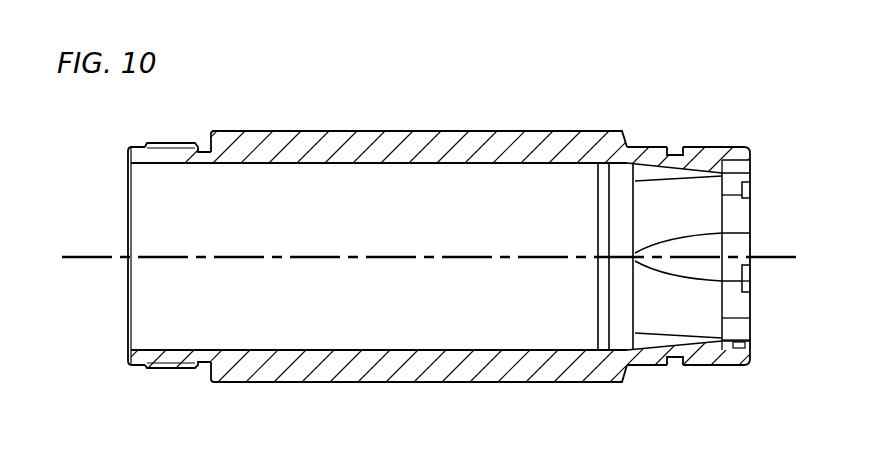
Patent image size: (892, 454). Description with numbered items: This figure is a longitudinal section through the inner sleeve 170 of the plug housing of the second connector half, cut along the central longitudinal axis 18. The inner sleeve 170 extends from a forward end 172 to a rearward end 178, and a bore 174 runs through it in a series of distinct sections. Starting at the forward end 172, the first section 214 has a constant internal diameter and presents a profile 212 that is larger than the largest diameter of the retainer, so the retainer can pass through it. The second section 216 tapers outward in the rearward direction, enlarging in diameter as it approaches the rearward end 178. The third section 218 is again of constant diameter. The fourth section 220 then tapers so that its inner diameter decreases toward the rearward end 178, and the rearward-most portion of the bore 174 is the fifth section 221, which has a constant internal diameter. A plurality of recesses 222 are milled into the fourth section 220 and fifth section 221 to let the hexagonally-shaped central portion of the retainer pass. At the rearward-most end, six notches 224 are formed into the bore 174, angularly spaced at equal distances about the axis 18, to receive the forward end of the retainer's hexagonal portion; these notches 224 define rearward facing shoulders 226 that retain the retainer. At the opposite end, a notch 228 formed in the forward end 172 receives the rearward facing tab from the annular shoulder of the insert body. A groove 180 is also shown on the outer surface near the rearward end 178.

The central longitudinal axis 18 is at (110, 255).
The inner sleeve 170 is at (444, 130).
The forward end 172 is at (174, 145).
The bore 174 is at (302, 164).
The rearward end 178 is at (707, 153).
The groove 180 is at (673, 152).
The profile 212 is at (299, 344).
The first section 214 is at (390, 350).
The second section 216 is at (600, 350).
The third section 218 is at (621, 163).
The fourth section 220 is at (652, 343).
The fifth section 221 is at (743, 338).
The recesses 222 is at (730, 246).
The notches 224 is at (747, 272).
The rearward facing shoulders 226 is at (745, 288).
The notch 228 is at (130, 155).